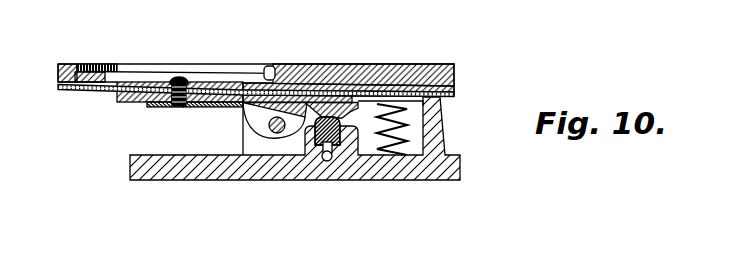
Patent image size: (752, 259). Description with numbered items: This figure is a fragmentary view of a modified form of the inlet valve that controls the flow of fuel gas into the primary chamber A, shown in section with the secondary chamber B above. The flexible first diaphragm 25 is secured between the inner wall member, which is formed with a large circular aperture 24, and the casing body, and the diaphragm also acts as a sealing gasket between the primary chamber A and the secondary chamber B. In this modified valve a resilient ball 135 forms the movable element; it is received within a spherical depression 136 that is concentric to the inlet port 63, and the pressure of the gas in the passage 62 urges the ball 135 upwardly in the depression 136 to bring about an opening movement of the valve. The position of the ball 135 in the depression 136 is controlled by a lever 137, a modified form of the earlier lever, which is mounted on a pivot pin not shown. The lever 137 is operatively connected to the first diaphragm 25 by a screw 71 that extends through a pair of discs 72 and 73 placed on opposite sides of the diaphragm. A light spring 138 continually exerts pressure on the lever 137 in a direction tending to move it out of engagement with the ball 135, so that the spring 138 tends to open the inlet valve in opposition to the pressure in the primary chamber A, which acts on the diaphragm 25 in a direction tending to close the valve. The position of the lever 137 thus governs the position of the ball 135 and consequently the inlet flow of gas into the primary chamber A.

The secondary chamber B is at (256, 64).
The primary chamber A is at (293, 138).
The first diaphragm 25 is at (80, 92).
The disc 73 is at (121, 102).
The disc 72 is at (155, 82).
The screw 71 is at (190, 80).
The circular aperture 24 is at (268, 66).
The lever 137 is at (194, 107).
The resilient ball 135 is at (330, 108).
The spring 138 is at (413, 138).
The spherical depression 136 is at (318, 130).
The inlet port 63 is at (331, 150).
The passage 62 is at (326, 161).